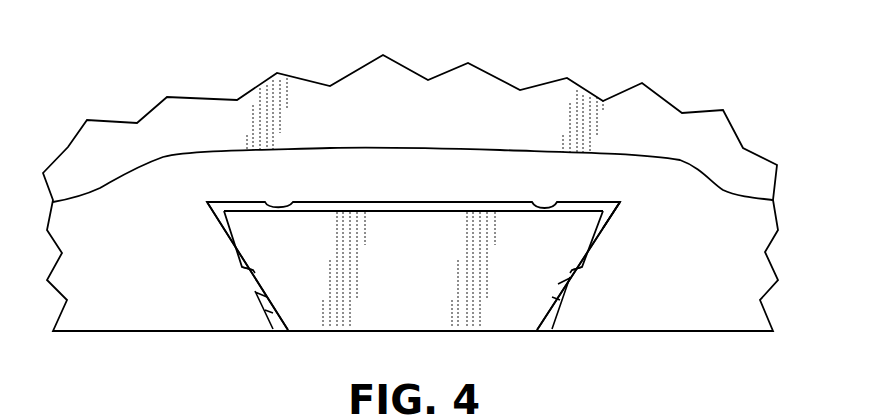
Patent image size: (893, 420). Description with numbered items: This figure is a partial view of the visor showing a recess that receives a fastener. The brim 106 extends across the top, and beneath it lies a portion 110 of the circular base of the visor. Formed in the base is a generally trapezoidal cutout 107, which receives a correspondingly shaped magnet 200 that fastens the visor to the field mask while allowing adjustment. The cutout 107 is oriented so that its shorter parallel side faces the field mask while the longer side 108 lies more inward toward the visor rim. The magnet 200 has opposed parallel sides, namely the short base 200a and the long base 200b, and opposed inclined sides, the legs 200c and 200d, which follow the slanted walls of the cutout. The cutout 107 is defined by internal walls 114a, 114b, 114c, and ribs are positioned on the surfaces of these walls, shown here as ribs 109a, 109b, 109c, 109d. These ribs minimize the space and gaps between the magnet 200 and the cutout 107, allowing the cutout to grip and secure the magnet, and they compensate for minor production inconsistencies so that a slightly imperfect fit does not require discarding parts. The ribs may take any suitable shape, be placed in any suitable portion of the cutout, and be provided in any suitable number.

The brim 106 is at (497, 100).
The portion of the circular base 110 is at (415, 147).
The longer side 108 is at (392, 206).
The cutout 107 is at (603, 228).
The rib 109a is at (575, 277).
The rib 109b is at (547, 204).
The rib 109c is at (278, 207).
The rib 109d is at (252, 283).
The internal wall 114a is at (558, 305).
The internal wall 114b is at (410, 212).
The internal wall 114c is at (270, 298).
The magnet 200 is at (432, 299).
The short base 200a is at (412, 333).
The long base 200b is at (434, 206).
The leg 200c is at (272, 322).
The leg 200d is at (563, 313).